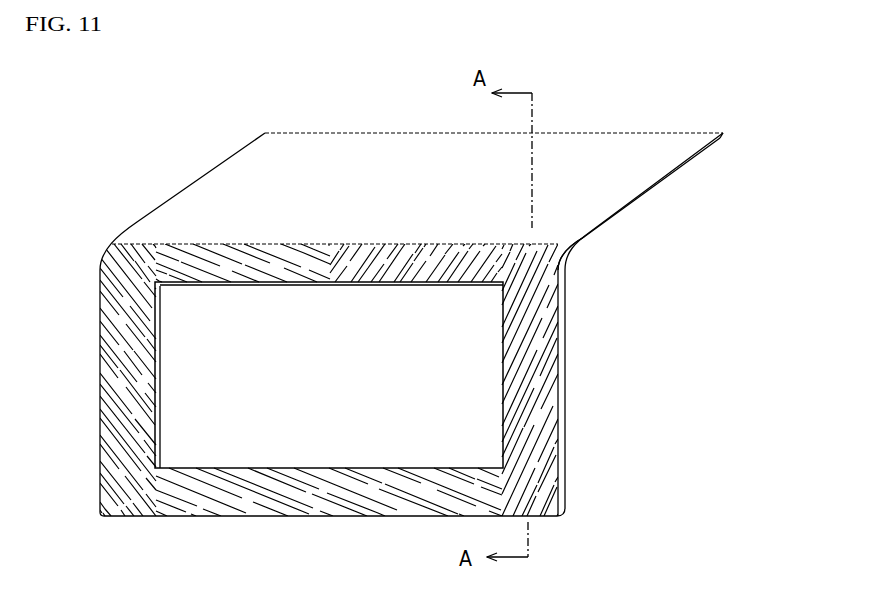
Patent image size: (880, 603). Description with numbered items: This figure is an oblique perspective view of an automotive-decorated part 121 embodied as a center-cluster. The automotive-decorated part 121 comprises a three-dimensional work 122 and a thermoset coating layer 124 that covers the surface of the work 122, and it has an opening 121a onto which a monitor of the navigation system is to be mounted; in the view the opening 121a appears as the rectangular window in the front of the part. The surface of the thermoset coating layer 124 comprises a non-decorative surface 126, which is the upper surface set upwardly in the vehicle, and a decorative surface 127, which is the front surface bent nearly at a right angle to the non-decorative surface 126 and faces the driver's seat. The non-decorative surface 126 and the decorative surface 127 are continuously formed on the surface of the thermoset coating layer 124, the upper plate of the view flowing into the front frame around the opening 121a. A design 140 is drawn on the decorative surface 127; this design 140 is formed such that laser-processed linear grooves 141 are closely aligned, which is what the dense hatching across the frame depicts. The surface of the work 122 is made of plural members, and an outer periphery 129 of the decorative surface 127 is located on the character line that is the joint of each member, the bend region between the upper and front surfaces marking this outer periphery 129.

The automotive-decorated part 121 is at (152, 170).
The opening 121a is at (503, 347).
The three-dimensional work 122 is at (662, 178).
The thermoset coating layer 124 is at (683, 140).
The non-decorative surface 126 is at (304, 156).
The decorative surface 127 is at (546, 443).
The outer periphery 129 is at (527, 249).
The design 140 is at (363, 405).
The laser-processed linear grooves 141 is at (120, 352).